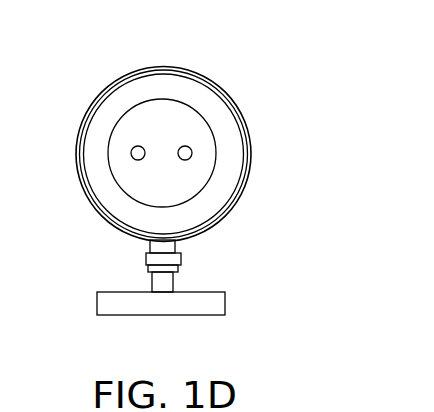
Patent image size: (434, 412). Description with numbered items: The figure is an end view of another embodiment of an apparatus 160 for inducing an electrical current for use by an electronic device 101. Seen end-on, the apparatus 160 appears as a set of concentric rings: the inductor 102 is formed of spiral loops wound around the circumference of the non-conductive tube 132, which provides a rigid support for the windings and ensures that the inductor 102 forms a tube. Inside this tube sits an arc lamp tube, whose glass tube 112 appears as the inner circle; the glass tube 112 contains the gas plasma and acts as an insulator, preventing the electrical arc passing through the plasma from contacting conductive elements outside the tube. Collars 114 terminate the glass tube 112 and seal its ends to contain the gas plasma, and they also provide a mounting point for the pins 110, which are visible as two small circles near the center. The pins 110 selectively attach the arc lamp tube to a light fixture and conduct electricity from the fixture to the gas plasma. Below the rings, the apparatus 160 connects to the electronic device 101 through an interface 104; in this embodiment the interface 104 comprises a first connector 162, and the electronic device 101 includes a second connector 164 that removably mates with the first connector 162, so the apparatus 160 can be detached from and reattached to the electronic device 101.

The apparatus 160 is at (107, 54).
The glass tube 112 is at (93, 128).
The non-conductive tube 132 is at (76, 151).
The inductor 102 is at (78, 178).
The interface 104 is at (131, 256).
The collars 114 is at (206, 128).
The pins 110 is at (188, 159).
The first connector 162 is at (181, 258).
The second connector 164 is at (178, 273).
The electronic device 101 is at (161, 303).